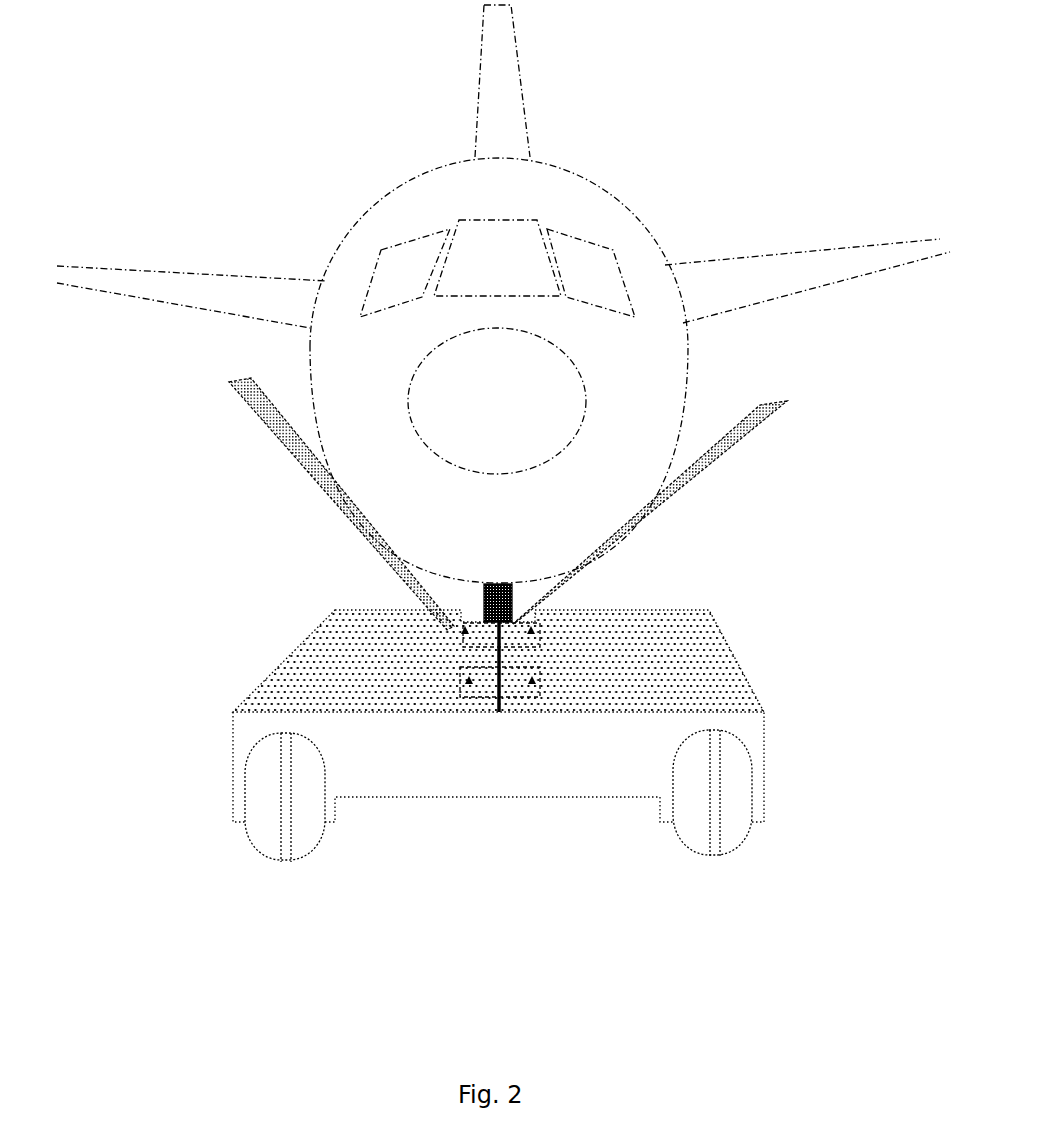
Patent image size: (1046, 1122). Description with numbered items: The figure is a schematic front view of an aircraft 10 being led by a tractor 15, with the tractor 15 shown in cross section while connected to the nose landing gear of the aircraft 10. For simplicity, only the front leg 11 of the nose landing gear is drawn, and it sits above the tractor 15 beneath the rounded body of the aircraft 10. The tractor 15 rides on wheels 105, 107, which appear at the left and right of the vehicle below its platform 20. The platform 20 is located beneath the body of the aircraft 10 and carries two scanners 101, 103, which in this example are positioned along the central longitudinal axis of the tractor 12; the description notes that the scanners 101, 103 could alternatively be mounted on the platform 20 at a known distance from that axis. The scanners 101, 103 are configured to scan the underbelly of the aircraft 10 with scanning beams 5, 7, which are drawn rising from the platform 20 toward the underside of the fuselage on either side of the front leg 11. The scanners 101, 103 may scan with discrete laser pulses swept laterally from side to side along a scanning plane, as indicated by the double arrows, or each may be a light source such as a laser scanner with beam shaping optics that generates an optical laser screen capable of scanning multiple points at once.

The aircraft 10 is at (645, 233).
The scanning beam 7 is at (253, 410).
The scanning beam 5 is at (697, 476).
The front leg 11 is at (484, 599).
The central longitudinal axis of the tractor 12 is at (522, 668).
The tractor 15 is at (766, 760).
The platform 20 is at (700, 656).
The scanner 101 is at (462, 641).
The scanner 103 is at (462, 692).
The wheel 105 is at (250, 840).
The wheel 107 is at (748, 833).